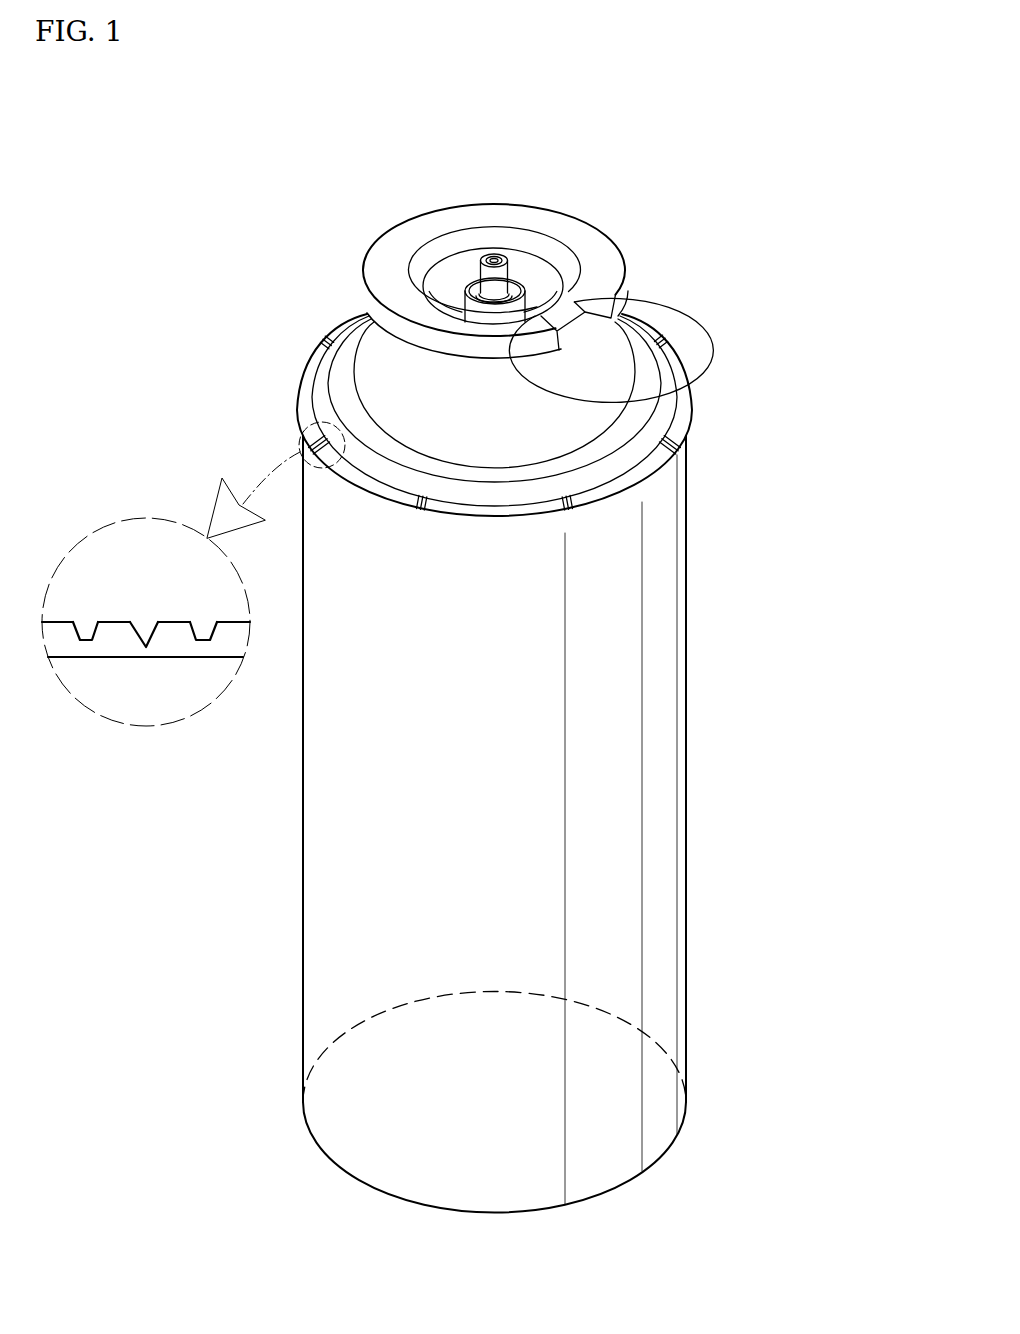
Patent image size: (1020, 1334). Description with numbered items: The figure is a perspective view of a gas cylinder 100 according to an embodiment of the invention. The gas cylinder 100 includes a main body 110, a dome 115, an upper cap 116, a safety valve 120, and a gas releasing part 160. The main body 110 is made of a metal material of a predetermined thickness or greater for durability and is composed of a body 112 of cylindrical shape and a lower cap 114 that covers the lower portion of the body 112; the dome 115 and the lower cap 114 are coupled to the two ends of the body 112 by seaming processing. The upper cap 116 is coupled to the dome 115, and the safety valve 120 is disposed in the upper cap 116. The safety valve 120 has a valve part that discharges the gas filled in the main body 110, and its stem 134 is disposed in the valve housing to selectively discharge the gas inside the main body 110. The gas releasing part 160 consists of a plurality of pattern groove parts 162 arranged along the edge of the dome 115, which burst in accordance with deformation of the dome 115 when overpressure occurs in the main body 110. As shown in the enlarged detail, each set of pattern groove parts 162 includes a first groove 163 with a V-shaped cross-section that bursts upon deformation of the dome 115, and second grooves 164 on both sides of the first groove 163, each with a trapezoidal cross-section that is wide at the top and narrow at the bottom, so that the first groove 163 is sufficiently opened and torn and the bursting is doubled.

The gas cylinder 100 is at (778, 175).
The main body 110 is at (817, 725).
The body 112 is at (678, 728).
The lower cap 114 is at (613, 1018).
The dome 115 is at (607, 357).
The upper cap 116 is at (605, 270).
The safety valve 120 is at (448, 280).
The stem 134 is at (490, 253).
The gas releasing part 160 is at (692, 438).
The pattern groove parts 162 is at (182, 818).
The first groove 163 is at (148, 629).
The second grooves 164 is at (203, 633).